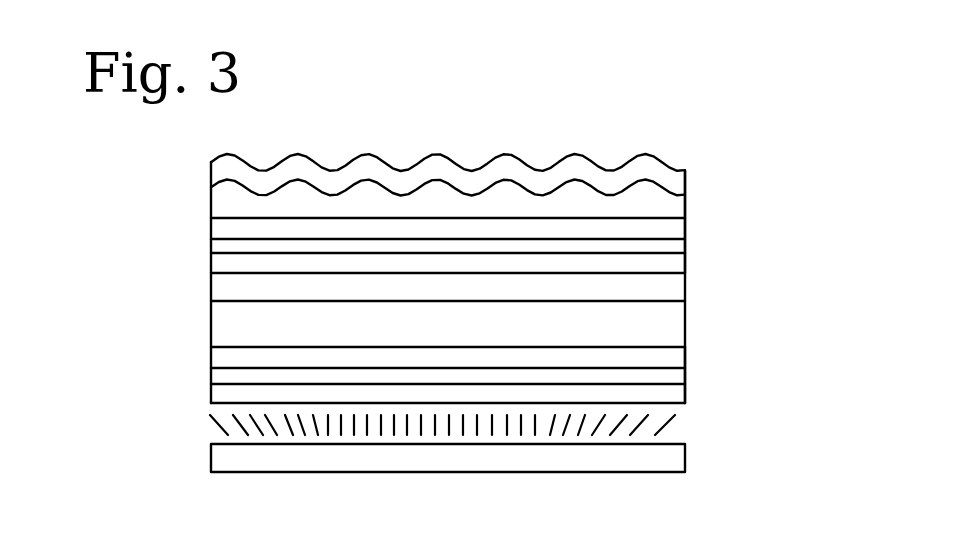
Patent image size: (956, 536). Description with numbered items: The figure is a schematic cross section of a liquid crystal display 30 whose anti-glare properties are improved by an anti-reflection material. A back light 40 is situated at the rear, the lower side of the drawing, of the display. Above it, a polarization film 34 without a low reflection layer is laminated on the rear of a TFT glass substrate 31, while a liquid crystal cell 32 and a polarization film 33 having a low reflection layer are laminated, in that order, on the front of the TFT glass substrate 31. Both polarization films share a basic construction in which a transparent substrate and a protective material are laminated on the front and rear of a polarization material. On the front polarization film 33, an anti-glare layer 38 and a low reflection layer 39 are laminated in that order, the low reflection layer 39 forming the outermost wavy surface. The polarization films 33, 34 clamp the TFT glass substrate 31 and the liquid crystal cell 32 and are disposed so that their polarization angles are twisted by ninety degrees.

The liquid crystal display 30 is at (182, 297).
The TFT glass substrate 31 is at (688, 323).
The liquid crystal cell 32 is at (688, 290).
The polarization film having a low reflection layer 33 is at (793, 152).
The polarization film without a low reflection layer 34 is at (790, 368).
The anti-glare layer 38 is at (688, 200).
The low reflection layer 39 is at (688, 172).
The back light 40 is at (688, 460).